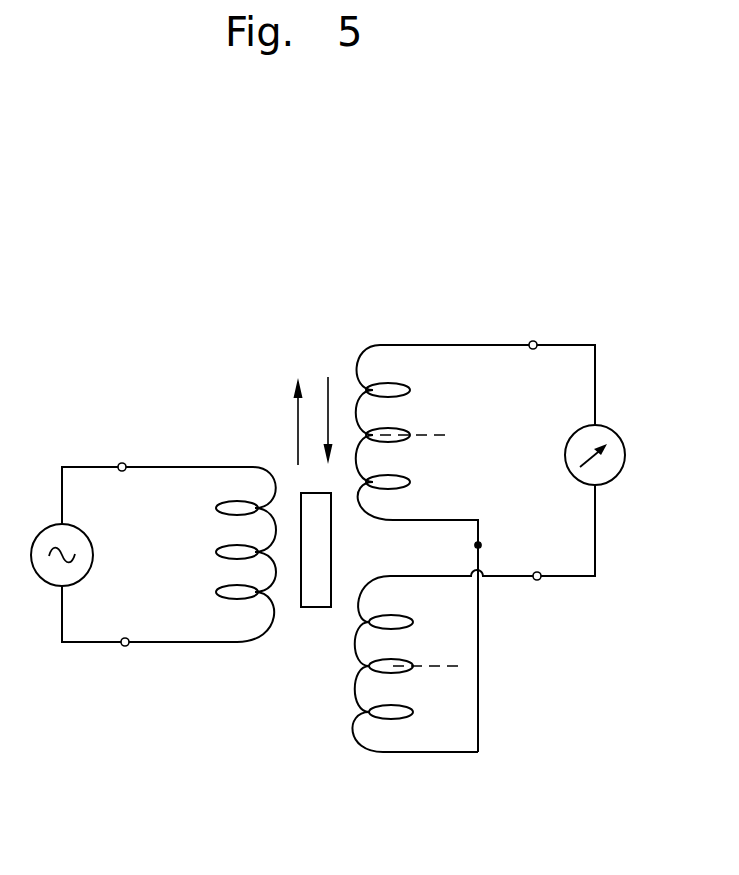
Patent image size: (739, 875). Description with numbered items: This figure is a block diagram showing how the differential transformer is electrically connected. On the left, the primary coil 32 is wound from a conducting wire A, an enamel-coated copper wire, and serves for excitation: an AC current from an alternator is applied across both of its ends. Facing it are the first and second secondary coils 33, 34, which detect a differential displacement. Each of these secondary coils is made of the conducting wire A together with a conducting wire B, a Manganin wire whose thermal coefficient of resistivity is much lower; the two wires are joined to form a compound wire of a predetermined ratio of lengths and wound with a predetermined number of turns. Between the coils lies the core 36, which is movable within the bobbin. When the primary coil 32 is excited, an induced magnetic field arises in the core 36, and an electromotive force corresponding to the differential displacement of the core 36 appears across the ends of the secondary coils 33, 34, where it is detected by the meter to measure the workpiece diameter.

The primary coil 32 is at (162, 467).
The first secondary coil 33 is at (458, 345).
The second secondary coil 34 is at (435, 752).
The core 36 is at (312, 600).
The conducting wire A is at (257, 467).
The conducting wire B is at (380, 348).